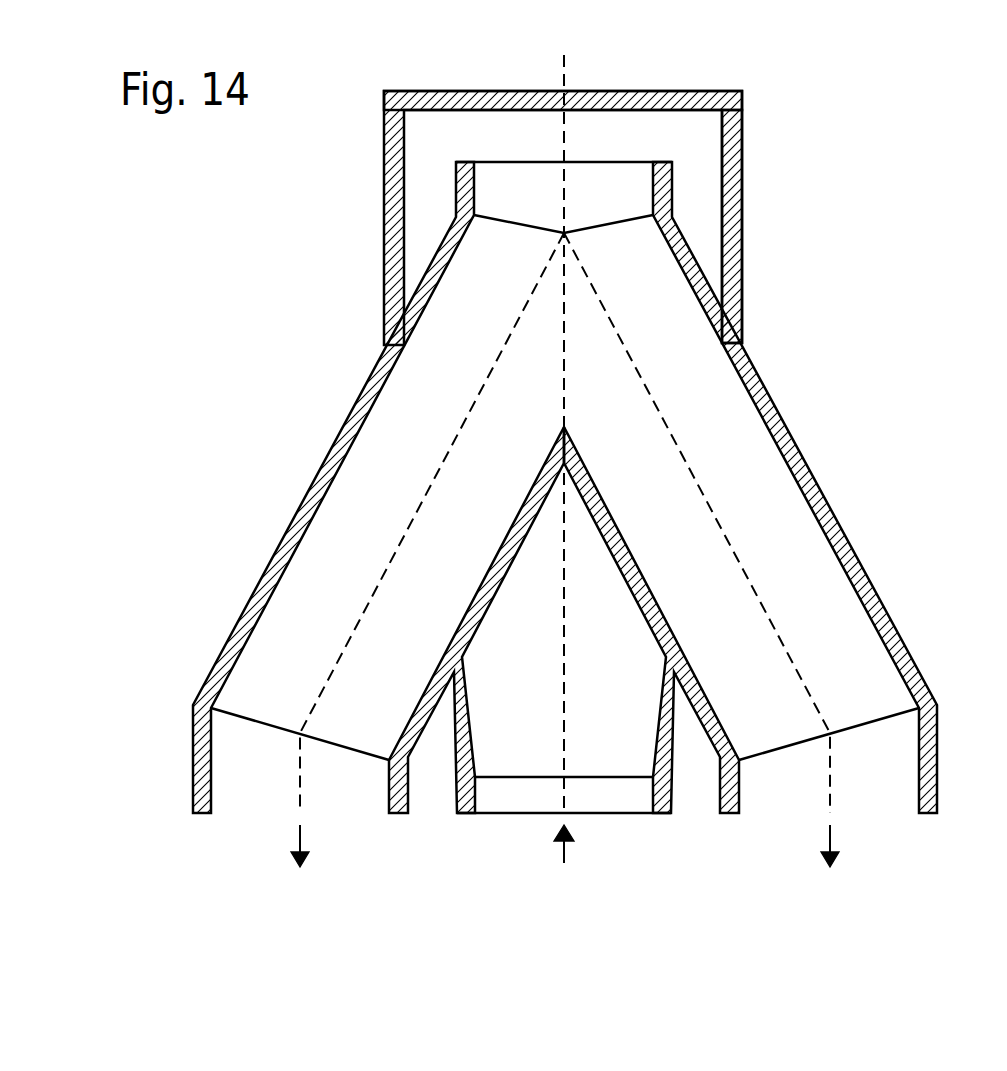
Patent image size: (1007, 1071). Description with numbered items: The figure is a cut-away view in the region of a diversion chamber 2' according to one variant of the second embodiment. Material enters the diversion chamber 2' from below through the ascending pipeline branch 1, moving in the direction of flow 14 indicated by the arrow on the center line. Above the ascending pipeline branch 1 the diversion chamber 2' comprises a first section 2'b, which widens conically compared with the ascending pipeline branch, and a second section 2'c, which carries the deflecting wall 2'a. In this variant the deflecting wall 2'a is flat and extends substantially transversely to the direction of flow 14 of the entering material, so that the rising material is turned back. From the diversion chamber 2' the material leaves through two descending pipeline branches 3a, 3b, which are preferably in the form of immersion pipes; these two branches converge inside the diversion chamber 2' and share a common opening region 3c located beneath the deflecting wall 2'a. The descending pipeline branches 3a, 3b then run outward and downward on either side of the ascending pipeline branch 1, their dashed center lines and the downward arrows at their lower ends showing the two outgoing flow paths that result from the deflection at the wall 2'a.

The diversion chamber 2' is at (457, 218).
The deflecting wall 2'a is at (647, 150).
The first section 2'b is at (645, 620).
The second section 2'c is at (791, 226).
The descending pipeline branch 3a is at (332, 583).
The descending pipeline branch 3b is at (853, 657).
The common opening region 3c is at (463, 197).
The ascending pipeline branch 1 is at (627, 805).
The direction of flow 14 is at (570, 858).